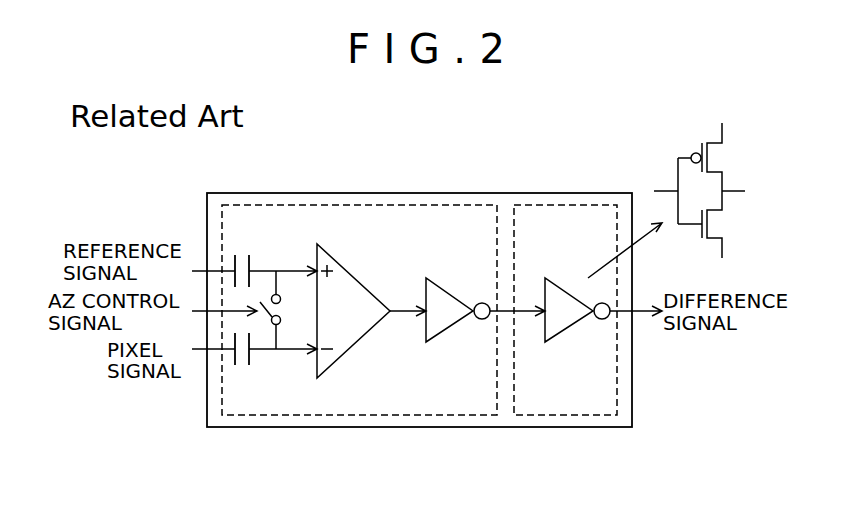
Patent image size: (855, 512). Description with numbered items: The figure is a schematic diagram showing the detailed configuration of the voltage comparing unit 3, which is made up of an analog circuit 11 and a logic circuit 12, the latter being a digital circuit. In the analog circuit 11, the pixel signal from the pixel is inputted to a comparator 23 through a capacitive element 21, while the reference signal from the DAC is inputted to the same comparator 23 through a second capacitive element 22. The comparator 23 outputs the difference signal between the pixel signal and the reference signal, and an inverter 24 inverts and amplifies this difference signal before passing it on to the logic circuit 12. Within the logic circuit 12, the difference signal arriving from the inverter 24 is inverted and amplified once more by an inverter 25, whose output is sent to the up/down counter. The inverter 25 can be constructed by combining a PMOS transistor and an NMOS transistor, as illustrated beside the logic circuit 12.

The voltage comparing unit 3 is at (420, 427).
The analog circuit 11 is at (447, 205).
The logic circuit 12 is at (566, 205).
The capacitive element 21 is at (250, 359).
The capacitive element 22 is at (250, 261).
The comparator 23 is at (352, 346).
The inverter 24 is at (440, 334).
The inverter 25 is at (559, 334).